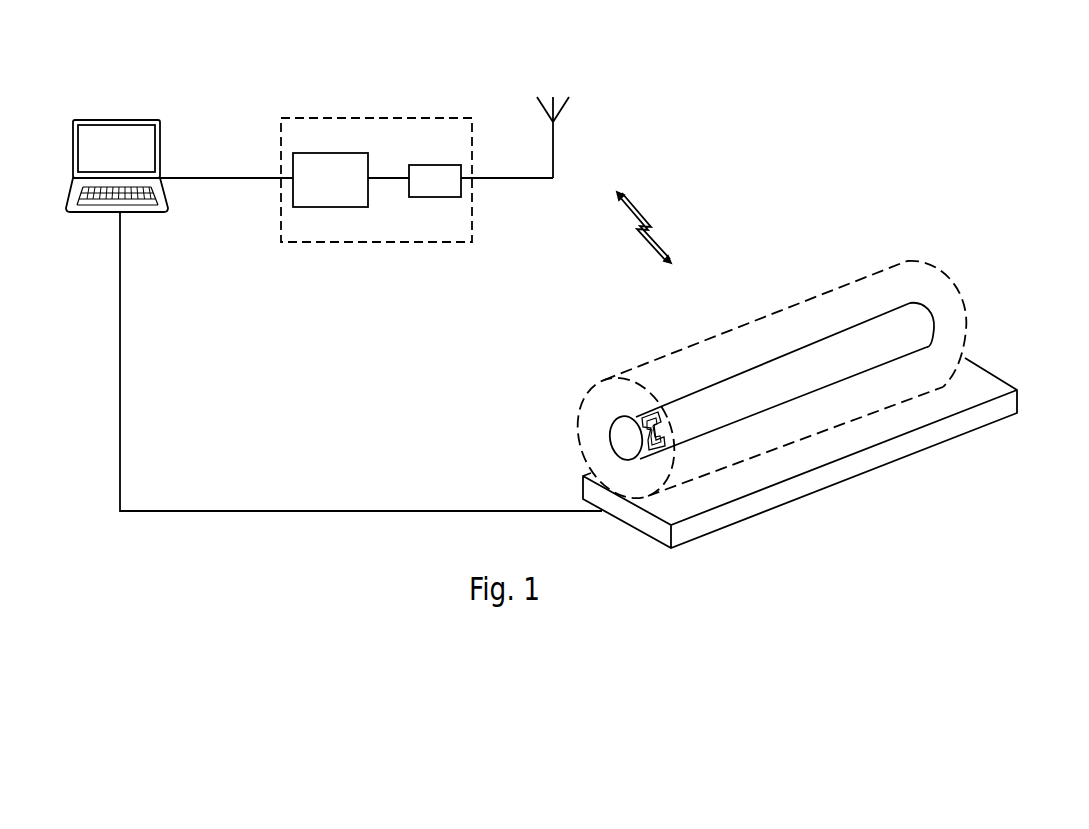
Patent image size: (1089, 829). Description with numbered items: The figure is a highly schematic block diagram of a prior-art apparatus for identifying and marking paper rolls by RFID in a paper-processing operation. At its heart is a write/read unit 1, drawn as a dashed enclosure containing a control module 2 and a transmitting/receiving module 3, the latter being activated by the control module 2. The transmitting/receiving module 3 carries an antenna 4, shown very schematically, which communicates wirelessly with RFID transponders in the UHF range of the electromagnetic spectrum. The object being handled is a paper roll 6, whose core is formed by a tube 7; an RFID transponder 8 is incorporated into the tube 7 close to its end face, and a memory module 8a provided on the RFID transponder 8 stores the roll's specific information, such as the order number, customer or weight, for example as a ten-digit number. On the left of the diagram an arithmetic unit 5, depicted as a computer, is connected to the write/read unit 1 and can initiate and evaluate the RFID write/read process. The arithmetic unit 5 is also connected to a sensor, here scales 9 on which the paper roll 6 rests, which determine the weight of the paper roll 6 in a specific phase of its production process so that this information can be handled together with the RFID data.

The write/read unit 1 is at (388, 118).
The control module 2 is at (321, 152).
The transmitting/receiving module 3 is at (437, 165).
The antenna 4 is at (555, 148).
The arithmetic unit 5 is at (113, 120).
The paper roll 6 is at (767, 313).
The tube 7 is at (717, 378).
The RFID transponder 8 is at (637, 418).
The memory module 8a is at (662, 418).
The scales 9 is at (1018, 389).